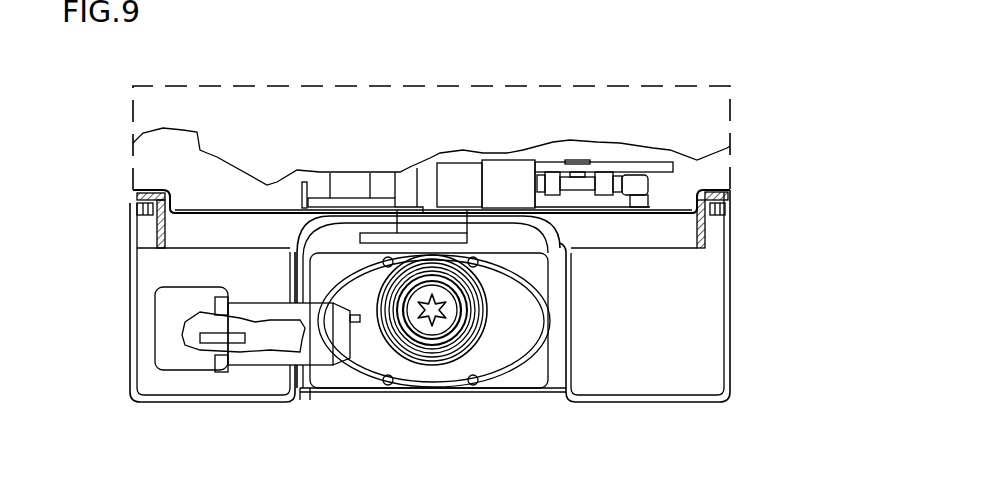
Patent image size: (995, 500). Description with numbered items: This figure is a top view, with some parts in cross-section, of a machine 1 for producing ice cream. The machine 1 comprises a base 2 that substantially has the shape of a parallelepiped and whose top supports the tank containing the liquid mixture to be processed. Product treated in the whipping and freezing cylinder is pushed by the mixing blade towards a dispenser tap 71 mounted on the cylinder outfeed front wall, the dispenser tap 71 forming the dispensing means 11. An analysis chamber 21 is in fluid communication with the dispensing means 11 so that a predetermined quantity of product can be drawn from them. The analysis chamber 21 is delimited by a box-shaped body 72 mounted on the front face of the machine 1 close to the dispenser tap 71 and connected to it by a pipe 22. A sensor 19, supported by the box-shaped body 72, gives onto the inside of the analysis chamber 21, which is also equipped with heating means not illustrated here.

The machine 1 is at (772, 114).
The base 2 is at (128, 130).
The dispensing means 11 is at (500, 348).
The sensor 19 is at (220, 338).
The analysis chamber 21 is at (248, 307).
The pipe 22 is at (350, 312).
The dispenser tap 71 is at (386, 353).
The box-shaped body 72 is at (260, 342).